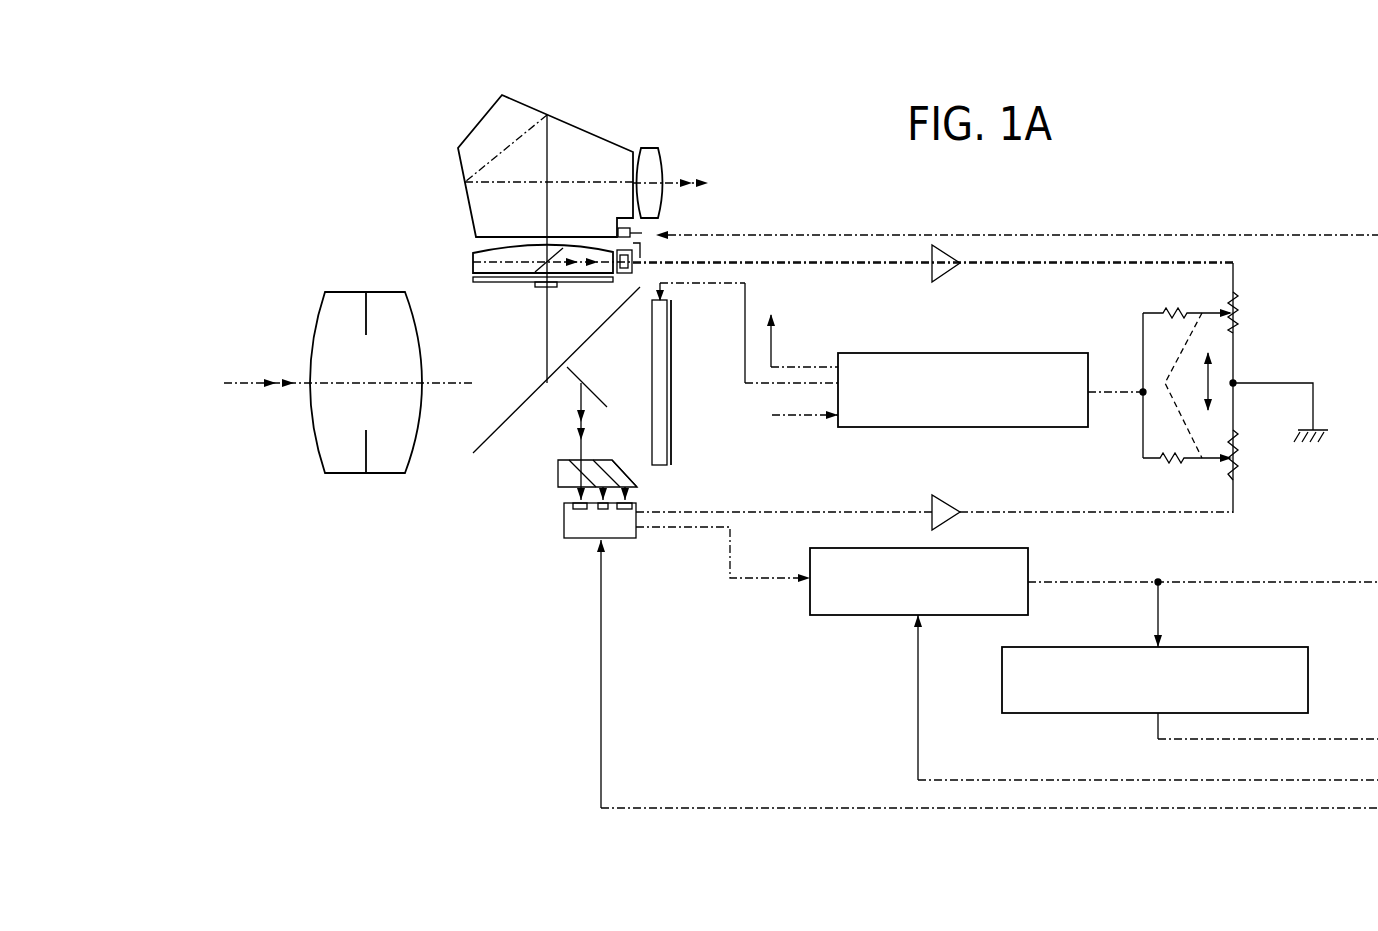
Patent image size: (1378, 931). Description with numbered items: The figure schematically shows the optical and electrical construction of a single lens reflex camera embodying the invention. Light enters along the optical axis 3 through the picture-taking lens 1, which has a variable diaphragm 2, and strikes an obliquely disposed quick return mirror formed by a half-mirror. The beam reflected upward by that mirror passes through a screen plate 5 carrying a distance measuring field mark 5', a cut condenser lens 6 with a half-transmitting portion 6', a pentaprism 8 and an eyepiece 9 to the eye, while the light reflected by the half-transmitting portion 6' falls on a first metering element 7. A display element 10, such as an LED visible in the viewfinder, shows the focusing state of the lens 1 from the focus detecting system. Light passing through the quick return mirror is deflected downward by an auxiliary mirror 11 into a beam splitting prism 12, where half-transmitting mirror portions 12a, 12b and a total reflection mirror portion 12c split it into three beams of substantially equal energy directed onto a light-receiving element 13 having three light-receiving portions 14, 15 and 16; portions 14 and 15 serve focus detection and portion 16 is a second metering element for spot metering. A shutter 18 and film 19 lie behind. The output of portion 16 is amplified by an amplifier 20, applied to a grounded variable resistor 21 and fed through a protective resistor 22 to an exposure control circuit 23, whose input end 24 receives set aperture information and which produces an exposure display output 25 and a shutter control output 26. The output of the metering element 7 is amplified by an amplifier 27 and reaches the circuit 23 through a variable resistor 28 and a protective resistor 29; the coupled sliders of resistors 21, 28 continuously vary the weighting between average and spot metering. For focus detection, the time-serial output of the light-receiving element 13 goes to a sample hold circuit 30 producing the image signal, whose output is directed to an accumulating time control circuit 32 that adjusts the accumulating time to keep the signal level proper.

The picture-taking lens 1 is at (338, 475).
The variable diaphragm 2 is at (366, 452).
The optical axis 3 is at (244, 386).
The screen plate 5 is at (543, 304).
The distance measuring field mark 5' is at (538, 308).
The cut condenser lens 6 is at (827, 259).
The half-transmitting portion 6' is at (552, 241).
The metering element 7 is at (625, 274).
The pentaprism 8 is at (472, 206).
The eyepiece 9 is at (645, 148).
The display element 10 is at (650, 232).
The auxiliary mirror 11 is at (588, 392).
The beam splitting prism 12 is at (557, 478).
The half-transmitting mirror portion 12a is at (570, 462).
The half-transmitting mirror portion 12b is at (600, 460).
The total reflection mirror portion 12c is at (631, 471).
The light-receiving element 13 is at (575, 540).
The light-receiving portion 14 is at (575, 512).
The light-receiving portion 15 is at (602, 510).
The light-receiving portion 16 is at (632, 505).
The shutter 18 is at (650, 347).
The film 19 is at (673, 350).
The amplifier 20 is at (955, 498).
The variable resistor 21 is at (1240, 460).
The resistor 22 is at (1166, 466).
The exposure control circuit 23 is at (885, 428).
The input end 24 is at (787, 424).
The exposure display output 25 is at (776, 335).
The shutter control output 26 is at (745, 390).
The amplifier 27 is at (950, 272).
The variable resistor 28 is at (1240, 312).
The protective resistor 29 is at (1208, 308).
The sample hold circuit 30 is at (852, 617).
The accumulating time control circuit 32 is at (1318, 669).